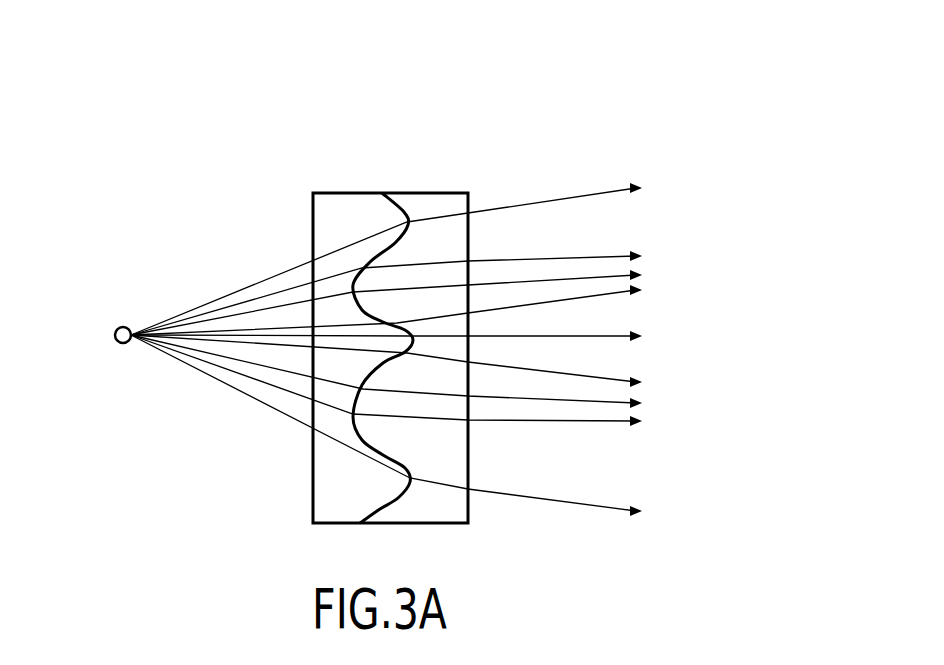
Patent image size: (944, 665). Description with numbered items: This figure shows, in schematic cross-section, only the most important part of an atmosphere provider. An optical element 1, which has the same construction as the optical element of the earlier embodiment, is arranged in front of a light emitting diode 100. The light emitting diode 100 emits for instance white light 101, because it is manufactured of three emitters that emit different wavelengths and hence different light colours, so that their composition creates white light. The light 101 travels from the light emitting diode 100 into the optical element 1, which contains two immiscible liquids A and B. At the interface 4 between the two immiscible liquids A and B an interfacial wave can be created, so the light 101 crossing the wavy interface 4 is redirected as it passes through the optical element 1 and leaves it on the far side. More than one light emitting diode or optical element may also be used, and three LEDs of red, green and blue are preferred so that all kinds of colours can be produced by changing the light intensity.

The optical element 1 is at (410, 130).
The interface 4 is at (407, 208).
The light emitting diode 100 is at (118, 328).
The white light 101 is at (201, 279).
The first immiscible liquid A is at (332, 482).
The second immiscible liquid B is at (452, 505).